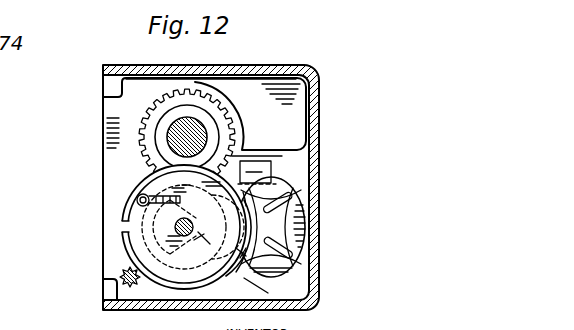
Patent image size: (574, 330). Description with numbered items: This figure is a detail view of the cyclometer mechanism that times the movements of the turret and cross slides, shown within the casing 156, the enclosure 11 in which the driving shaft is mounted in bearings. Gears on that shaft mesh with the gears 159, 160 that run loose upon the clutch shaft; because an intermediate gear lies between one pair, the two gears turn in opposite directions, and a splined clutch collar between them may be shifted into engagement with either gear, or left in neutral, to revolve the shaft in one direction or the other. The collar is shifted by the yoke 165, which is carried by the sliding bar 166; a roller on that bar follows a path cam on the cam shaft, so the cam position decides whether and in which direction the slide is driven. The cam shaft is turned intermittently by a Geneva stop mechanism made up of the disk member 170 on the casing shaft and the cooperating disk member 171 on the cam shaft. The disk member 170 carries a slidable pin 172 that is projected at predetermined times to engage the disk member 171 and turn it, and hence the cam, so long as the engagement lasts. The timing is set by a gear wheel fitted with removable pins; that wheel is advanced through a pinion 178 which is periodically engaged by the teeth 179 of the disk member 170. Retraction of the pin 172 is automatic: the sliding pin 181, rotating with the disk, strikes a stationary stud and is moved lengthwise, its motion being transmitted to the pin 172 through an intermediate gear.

The housing 11 is at (123, 190).
The casing 156 is at (201, 315).
The gear 159 is at (208, 93).
The gear 160 is at (140, 120).
The yoke 165 is at (241, 131).
The sliding bar 166 is at (272, 170).
The disk member 170 is at (186, 227).
The disk member 171 is at (272, 231).
The slidable pin 172 is at (136, 202).
The pinion 178 is at (122, 266).
The teeth 179 is at (121, 224).
The sliding pin 181 is at (190, 219).